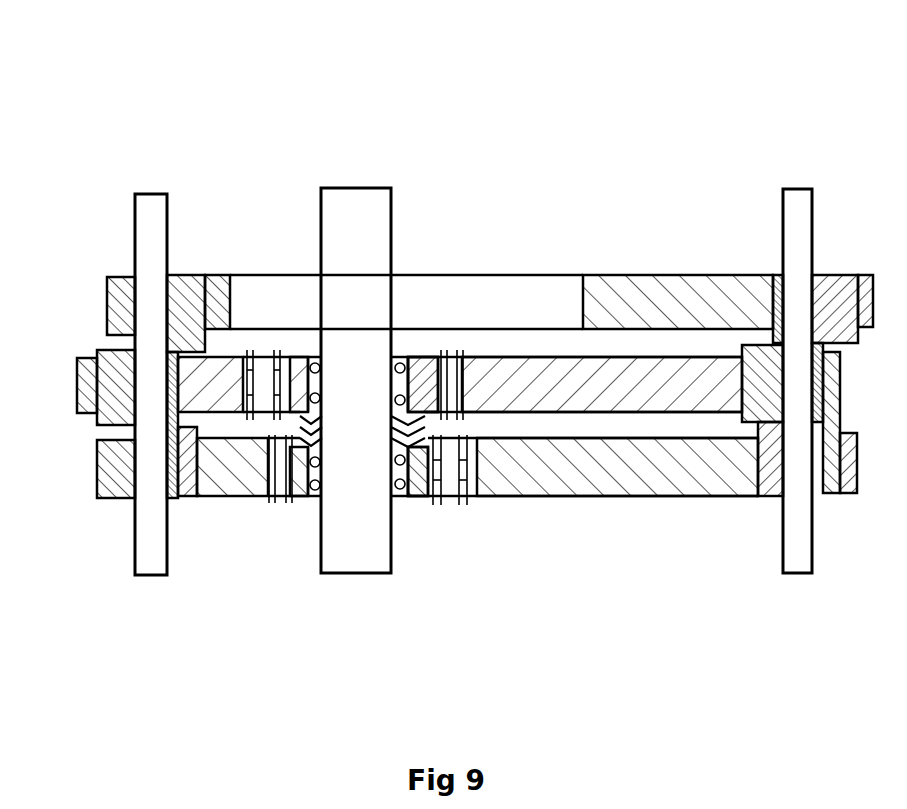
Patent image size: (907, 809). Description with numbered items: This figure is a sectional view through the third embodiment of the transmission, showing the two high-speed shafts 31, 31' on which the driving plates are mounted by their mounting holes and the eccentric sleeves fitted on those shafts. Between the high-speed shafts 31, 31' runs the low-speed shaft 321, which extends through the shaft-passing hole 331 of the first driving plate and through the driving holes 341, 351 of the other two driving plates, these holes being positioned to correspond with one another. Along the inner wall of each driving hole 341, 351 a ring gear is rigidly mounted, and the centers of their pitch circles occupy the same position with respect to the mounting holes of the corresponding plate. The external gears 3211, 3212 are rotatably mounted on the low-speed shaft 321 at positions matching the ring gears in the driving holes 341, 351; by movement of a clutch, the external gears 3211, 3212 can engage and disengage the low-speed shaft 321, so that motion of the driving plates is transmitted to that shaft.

The high-speed shaft 31 is at (114, 301).
The high-speed shaft 31' is at (818, 292).
The low-speed shaft 321 is at (341, 203).
The shaft-passing hole 331 is at (252, 283).
The external gear 3211 is at (417, 357).
The external gear 3212 is at (416, 497).
The driving hole 341 is at (268, 413).
The driving hole 351 is at (455, 497).